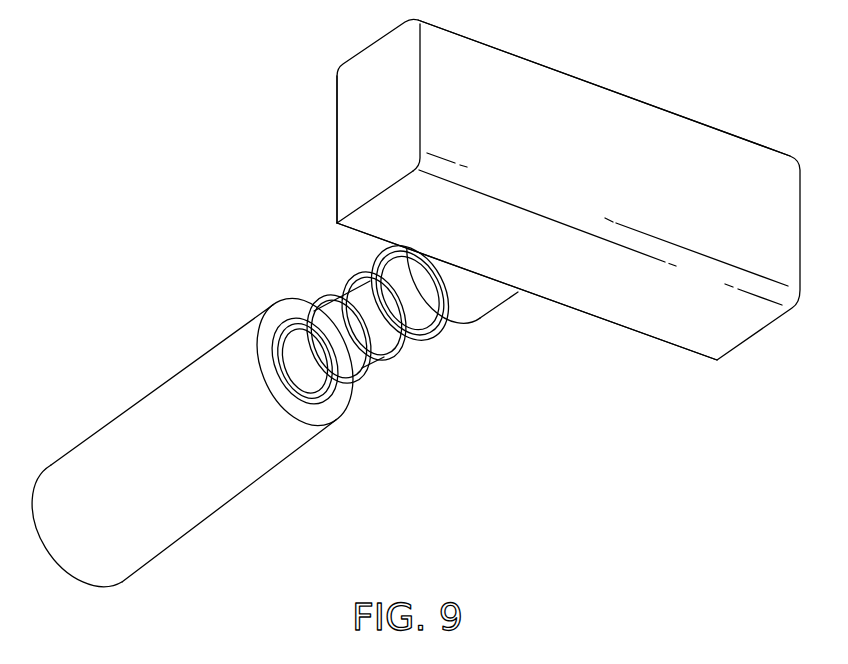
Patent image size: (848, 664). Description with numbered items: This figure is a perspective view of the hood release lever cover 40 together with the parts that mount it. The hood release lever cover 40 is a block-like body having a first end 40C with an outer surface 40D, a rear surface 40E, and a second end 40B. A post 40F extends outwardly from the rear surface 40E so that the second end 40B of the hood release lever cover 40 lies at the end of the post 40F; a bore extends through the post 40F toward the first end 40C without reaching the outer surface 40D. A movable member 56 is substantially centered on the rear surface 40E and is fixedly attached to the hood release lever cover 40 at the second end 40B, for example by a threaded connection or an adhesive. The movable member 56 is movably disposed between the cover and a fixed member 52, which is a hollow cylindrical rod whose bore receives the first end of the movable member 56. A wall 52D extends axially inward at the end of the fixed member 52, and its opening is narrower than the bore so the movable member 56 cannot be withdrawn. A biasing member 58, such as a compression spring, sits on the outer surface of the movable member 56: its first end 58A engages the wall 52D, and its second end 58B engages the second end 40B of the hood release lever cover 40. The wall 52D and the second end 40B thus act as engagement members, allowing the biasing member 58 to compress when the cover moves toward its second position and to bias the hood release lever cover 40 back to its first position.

The hood release lever cover 40 is at (328, 109).
The second end of the hood release lever cover 40B is at (413, 290).
The first end of the hood release lever cover 40C is at (527, 100).
The outer surface of the first end 40D is at (687, 165).
The rear surface of the hood release lever cover 40E is at (352, 238).
The post 40F is at (503, 300).
The fixed member 52 is at (108, 422).
The wall 52D is at (287, 312).
The movable member 56 is at (330, 328).
The biasing member 58 is at (383, 373).
The first end of the biasing member 58A is at (280, 380).
The second end of the biasing member 58B is at (453, 323).